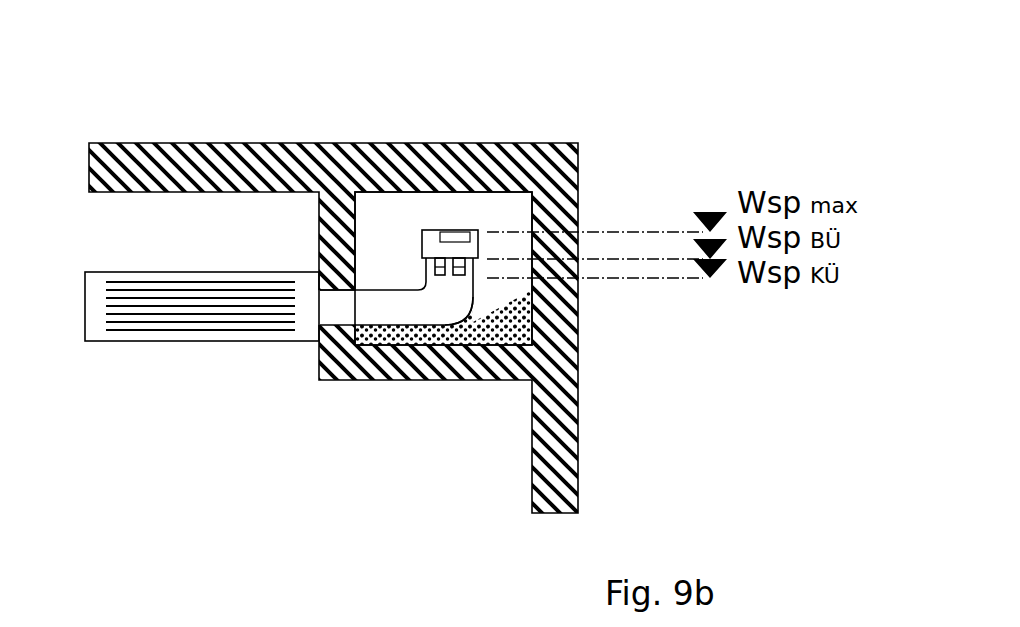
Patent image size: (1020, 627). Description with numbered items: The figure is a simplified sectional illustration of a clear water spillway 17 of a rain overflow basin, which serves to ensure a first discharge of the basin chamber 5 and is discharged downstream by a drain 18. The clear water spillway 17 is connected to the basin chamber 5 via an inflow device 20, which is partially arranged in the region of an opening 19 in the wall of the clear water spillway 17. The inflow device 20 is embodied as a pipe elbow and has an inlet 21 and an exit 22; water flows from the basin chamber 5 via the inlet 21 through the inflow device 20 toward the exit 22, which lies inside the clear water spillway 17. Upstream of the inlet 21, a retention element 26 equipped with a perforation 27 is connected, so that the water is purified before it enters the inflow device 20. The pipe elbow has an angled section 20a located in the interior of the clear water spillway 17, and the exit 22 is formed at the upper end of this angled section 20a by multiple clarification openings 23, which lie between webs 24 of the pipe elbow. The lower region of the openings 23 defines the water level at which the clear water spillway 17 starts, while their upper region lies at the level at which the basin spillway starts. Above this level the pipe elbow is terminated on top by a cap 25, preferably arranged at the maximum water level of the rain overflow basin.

The basin chamber 5 is at (187, 228).
The clear water spillway 17 is at (383, 205).
The drain 18 is at (453, 335).
The opening 19 is at (319, 290).
The inflow device 20 is at (355, 303).
The angled section 20a is at (455, 295).
The inlet 21 is at (317, 310).
The exit 22 is at (433, 276).
The openings 23 is at (460, 262).
The webs 24 is at (445, 262).
The cap 25 is at (470, 238).
The retention element 26 is at (95, 335).
The perforation 27 is at (160, 310).